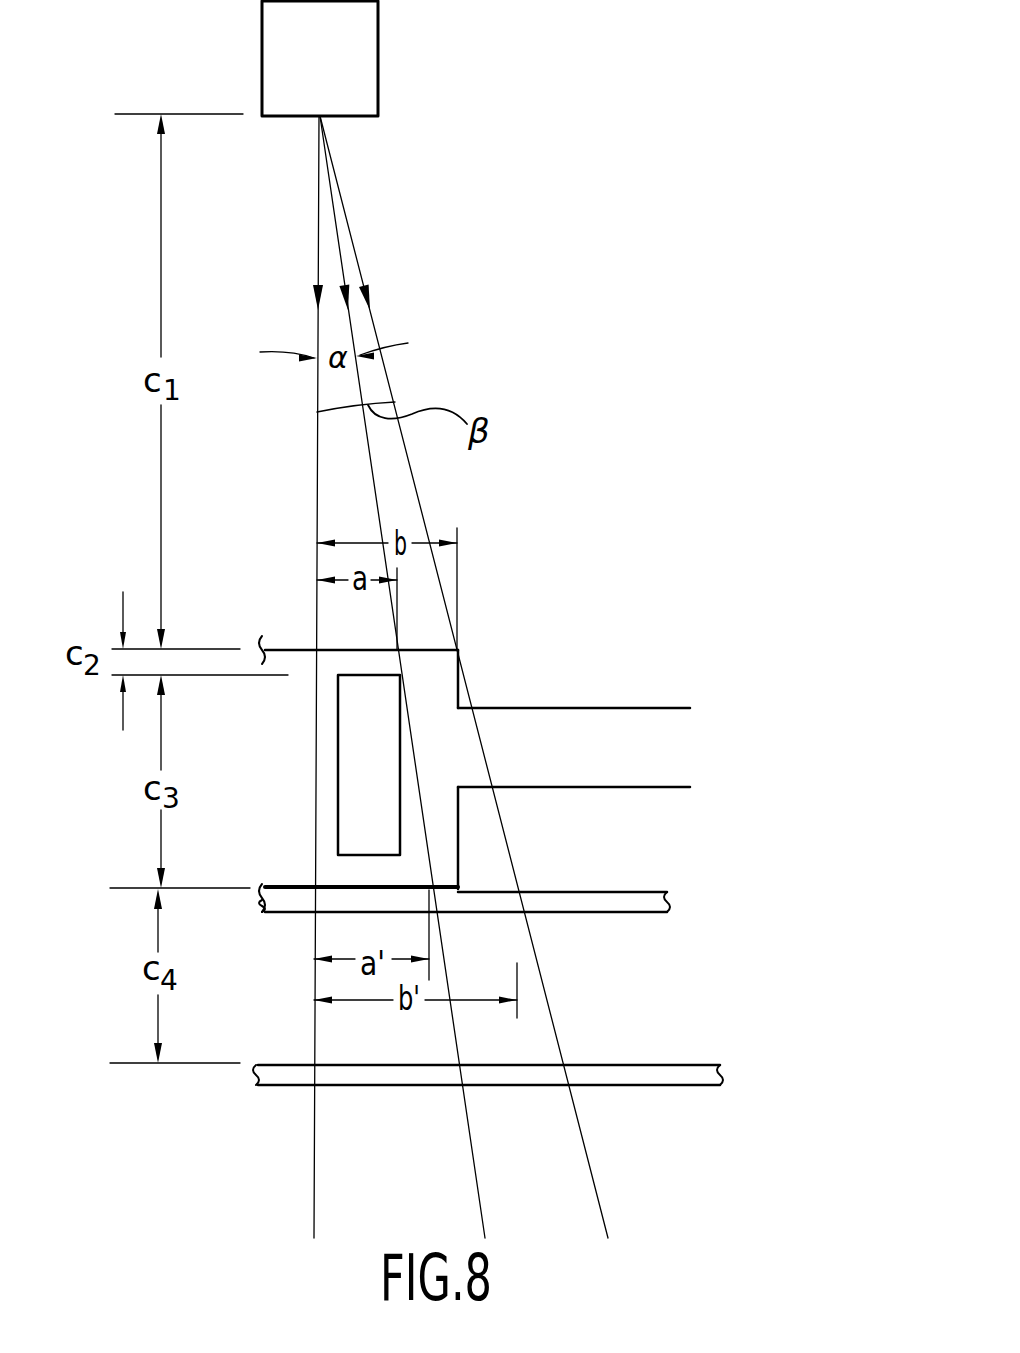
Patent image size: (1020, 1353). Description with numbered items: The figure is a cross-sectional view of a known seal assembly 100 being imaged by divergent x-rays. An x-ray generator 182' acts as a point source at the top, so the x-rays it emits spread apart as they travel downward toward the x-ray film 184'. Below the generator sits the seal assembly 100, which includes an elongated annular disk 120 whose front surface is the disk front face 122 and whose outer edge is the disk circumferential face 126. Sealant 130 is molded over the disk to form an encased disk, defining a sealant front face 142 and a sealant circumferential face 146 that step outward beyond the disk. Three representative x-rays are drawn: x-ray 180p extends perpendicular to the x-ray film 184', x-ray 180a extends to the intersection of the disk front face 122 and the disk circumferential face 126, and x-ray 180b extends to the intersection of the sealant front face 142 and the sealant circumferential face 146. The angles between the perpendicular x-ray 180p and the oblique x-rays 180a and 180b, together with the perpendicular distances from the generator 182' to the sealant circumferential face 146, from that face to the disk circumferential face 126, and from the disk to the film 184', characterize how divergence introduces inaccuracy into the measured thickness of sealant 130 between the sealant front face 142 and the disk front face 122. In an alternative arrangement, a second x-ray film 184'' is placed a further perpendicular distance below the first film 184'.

The x-ray generator 182' is at (320, 58).
The perpendicular x-ray 180p is at (318, 222).
The x-ray to disk edge 180a is at (340, 240).
The x-ray to sealant edge 180b is at (362, 266).
The sealant circumferential face 146 is at (432, 640).
The sealant 130 is at (436, 681).
The seal assembly 100 is at (534, 689).
The disk circumferential face 126 is at (370, 700).
The disk 120 is at (388, 835).
The sealant front face 142 is at (466, 811).
The disk front face 122 is at (410, 831).
The x-ray film 184' is at (517, 907).
The second x-ray film 184'' is at (541, 1082).